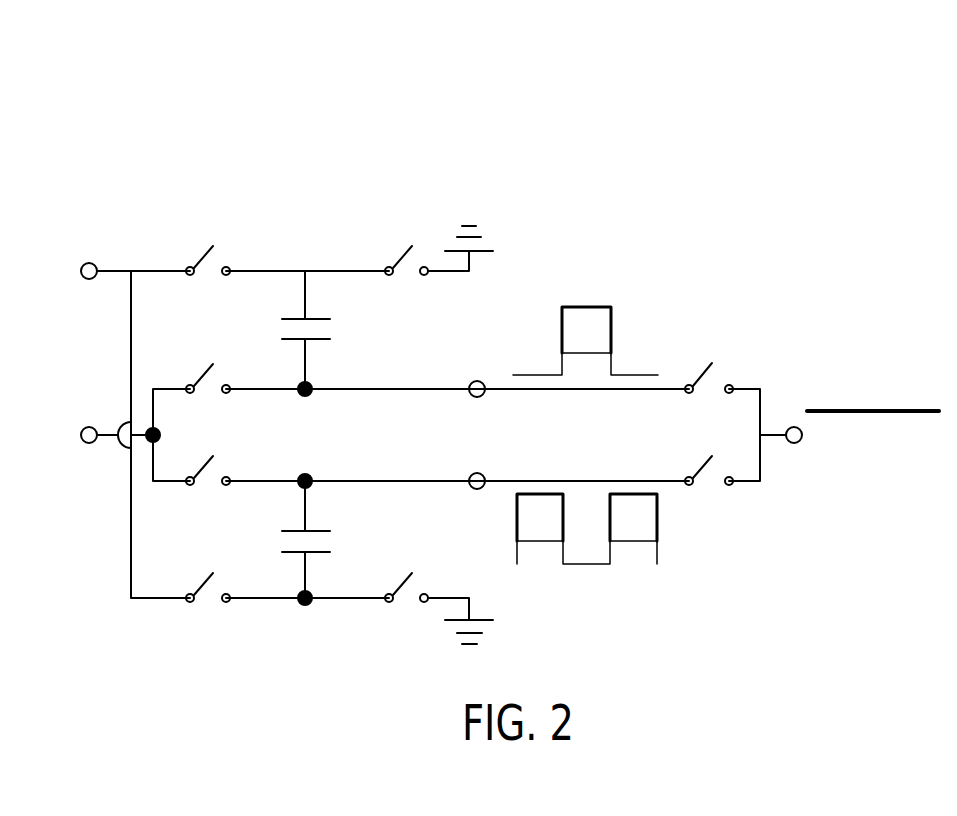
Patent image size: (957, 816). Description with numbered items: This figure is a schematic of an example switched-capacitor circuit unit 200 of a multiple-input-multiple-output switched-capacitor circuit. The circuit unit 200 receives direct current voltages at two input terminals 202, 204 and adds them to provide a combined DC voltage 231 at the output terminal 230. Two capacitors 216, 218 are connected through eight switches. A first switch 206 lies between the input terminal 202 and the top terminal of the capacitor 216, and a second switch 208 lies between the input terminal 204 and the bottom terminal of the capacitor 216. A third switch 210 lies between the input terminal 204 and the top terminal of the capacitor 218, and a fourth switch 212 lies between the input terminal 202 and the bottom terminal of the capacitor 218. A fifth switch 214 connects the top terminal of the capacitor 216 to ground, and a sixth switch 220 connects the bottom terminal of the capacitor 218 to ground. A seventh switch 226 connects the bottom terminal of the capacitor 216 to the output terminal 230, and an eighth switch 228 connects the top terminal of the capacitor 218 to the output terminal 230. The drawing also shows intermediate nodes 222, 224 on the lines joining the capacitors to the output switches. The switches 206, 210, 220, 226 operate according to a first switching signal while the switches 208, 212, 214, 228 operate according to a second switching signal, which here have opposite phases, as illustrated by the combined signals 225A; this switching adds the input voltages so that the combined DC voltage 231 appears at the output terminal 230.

The switched-capacitor circuit unit 200 is at (801, 132).
The input terminal 202 is at (88, 280).
The input terminal 204 is at (88, 444).
The first switch 206 is at (220, 237).
The second switch 208 is at (220, 353).
The third switch 210 is at (220, 458).
The fourth switch 212 is at (220, 570).
The fifth switch 214 is at (413, 240).
The capacitor 216 is at (335, 327).
The capacitor 218 is at (335, 544).
The sixth switch 220 is at (407, 605).
The intermediate node 222 is at (483, 380).
The intermediate node 224 is at (477, 490).
The combined signals 225A is at (625, 303).
The seventh switch 226 is at (717, 352).
The eighth switch 228 is at (712, 492).
The output terminal 230 is at (798, 443).
The combined DC voltage 231 is at (912, 383).